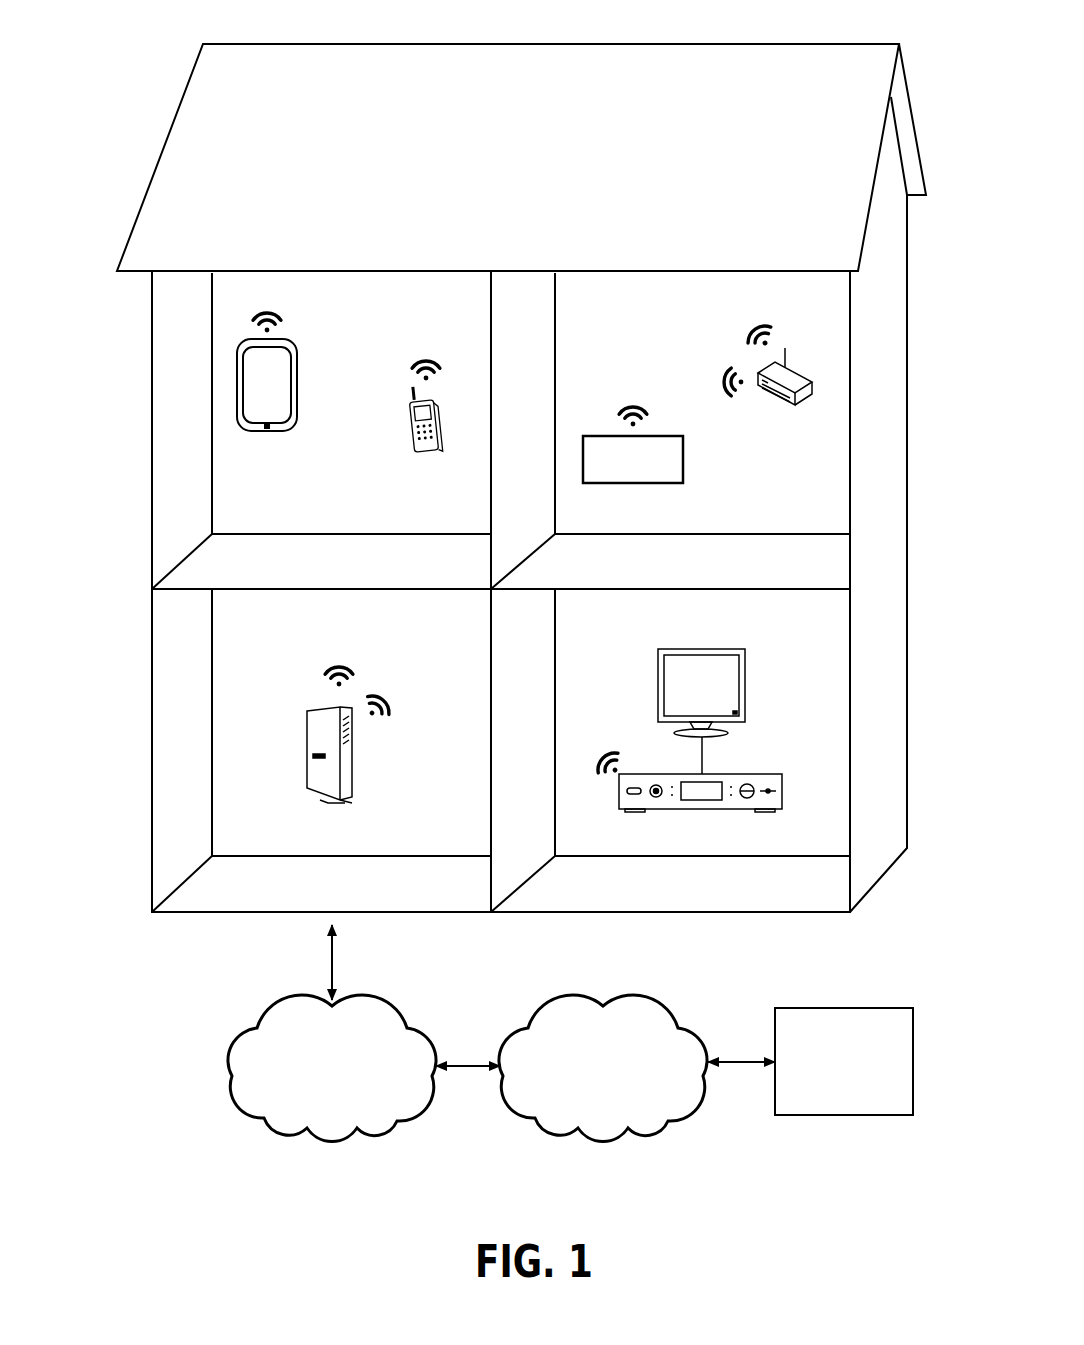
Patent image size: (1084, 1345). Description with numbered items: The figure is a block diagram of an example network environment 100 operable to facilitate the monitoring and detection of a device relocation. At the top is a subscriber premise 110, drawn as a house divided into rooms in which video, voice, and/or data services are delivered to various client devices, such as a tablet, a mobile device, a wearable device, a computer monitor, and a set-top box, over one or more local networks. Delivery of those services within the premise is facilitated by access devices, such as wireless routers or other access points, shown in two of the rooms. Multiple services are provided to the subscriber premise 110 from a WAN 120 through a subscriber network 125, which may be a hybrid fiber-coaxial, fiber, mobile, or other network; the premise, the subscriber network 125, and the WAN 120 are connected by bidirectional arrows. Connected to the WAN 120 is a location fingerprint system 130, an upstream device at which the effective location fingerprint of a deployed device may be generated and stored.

The network environment 100 is at (147, 1142).
The subscriber premise 110 is at (265, 43).
The WAN 120 is at (608, 1135).
The subscriber network 125 is at (338, 1136).
The location fingerprint system 130 is at (823, 1116).